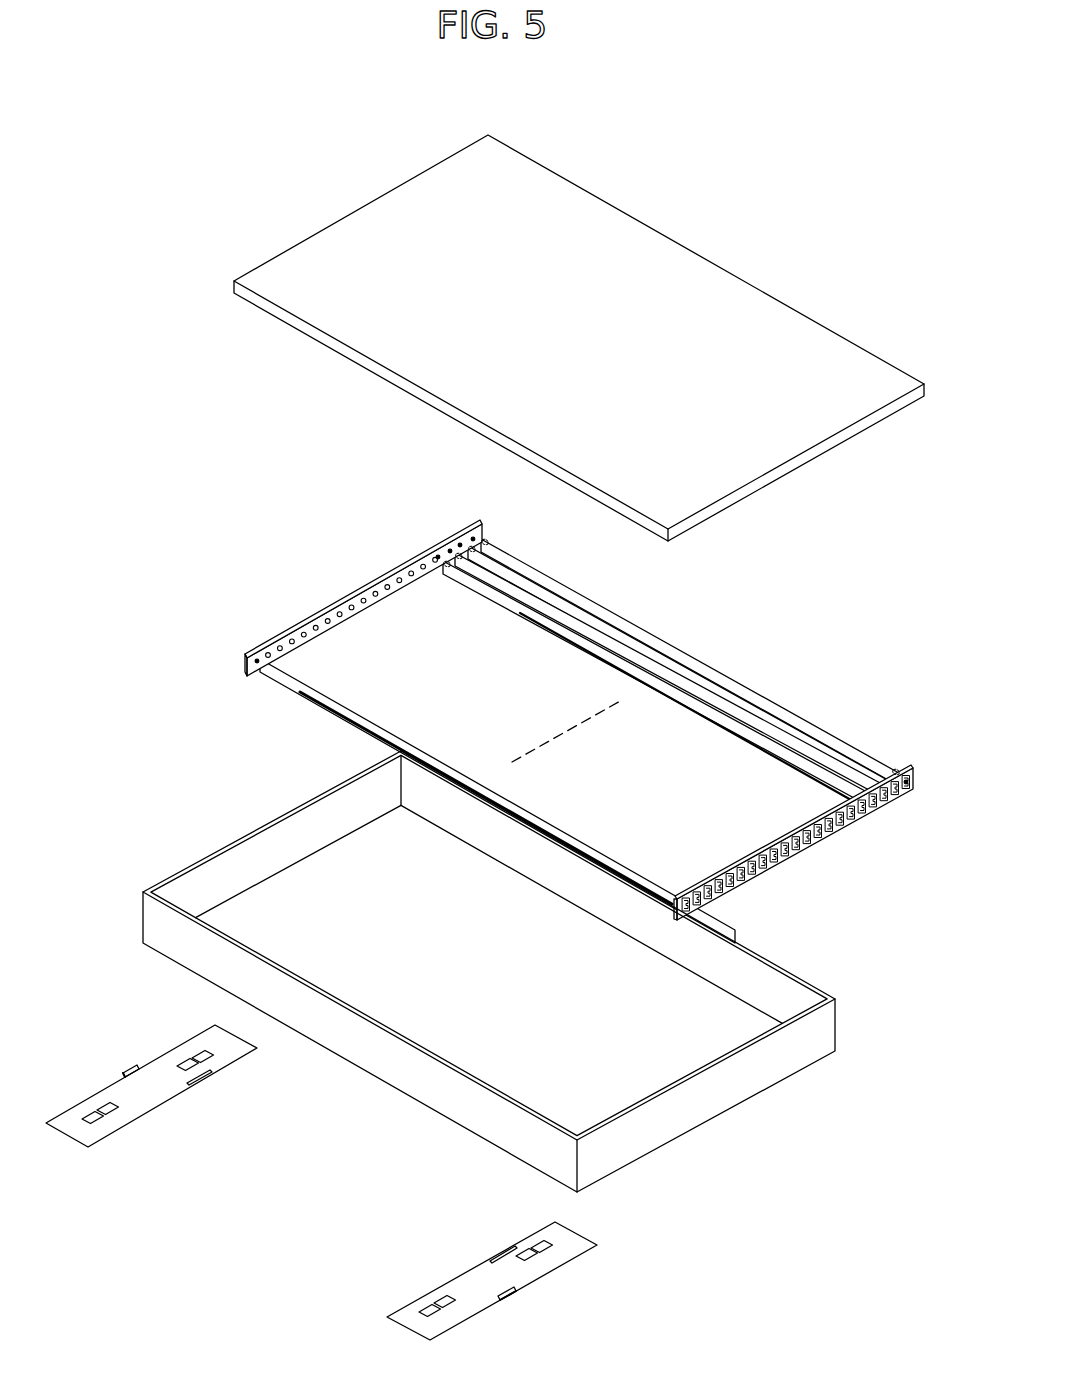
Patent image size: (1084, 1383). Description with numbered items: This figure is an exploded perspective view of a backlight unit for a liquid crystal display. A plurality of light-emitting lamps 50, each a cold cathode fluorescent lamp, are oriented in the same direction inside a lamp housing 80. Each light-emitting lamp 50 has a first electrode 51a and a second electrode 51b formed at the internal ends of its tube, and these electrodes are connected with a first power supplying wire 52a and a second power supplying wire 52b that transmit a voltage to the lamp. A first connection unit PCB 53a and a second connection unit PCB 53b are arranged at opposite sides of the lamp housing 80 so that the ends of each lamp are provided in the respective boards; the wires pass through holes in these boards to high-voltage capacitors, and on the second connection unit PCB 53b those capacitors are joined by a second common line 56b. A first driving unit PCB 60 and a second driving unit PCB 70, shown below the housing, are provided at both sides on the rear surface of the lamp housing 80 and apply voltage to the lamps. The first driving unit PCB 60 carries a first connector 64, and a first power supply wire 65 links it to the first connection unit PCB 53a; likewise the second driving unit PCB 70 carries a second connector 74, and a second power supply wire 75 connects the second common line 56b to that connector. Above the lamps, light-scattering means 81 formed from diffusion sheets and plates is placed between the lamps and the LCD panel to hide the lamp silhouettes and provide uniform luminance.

The light-emitting lamp 50 is at (593, 710).
The first electrode 51a is at (486, 540).
The second electrode 51b is at (893, 770).
The first power supplying wire 52a is at (474, 533).
The second power supplying wire 52b is at (907, 786).
The first connection unit PCB 53a is at (400, 570).
The second connection unit PCB 53b is at (793, 842).
The second common line 56b is at (757, 872).
The first driving unit PCB 60 is at (151, 1077).
The first connector 64 is at (139, 1066).
The first power supply wire 65 is at (123, 1077).
The second driving unit PCB 70 is at (496, 1294).
The second connector 74 is at (514, 1289).
The second power supply wire 75 is at (512, 1297).
The lamp housing 80 is at (715, 1103).
The light-scattering means 81 is at (664, 248).